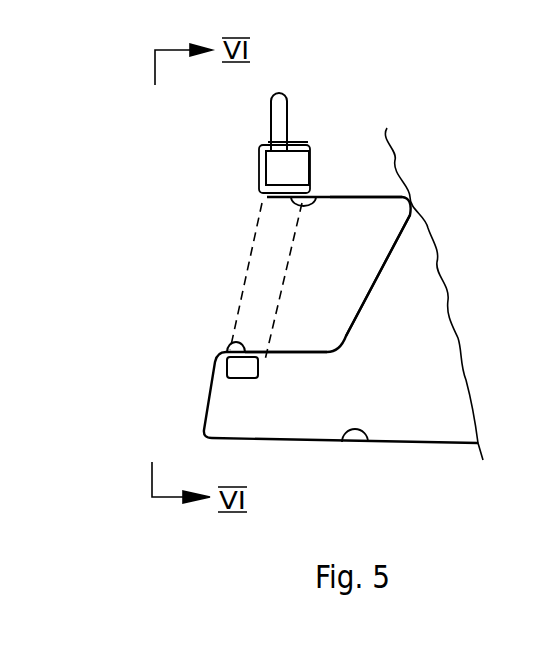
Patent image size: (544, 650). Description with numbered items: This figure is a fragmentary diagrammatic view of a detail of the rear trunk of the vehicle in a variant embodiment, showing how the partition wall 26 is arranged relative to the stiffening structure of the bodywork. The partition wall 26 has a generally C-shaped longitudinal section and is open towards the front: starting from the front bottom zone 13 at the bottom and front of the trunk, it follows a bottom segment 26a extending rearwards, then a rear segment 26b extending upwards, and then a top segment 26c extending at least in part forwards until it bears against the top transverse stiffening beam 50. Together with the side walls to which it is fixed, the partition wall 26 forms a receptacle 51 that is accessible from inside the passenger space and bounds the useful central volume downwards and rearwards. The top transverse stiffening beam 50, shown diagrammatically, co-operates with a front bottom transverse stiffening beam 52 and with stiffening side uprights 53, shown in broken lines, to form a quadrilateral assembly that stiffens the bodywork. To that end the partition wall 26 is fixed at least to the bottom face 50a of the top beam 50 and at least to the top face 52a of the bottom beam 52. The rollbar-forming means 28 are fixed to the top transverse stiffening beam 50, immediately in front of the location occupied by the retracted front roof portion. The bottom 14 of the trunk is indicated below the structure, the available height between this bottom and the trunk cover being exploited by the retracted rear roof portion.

The front bottom zone 13 is at (245, 400).
The bottom 14 is at (358, 443).
The partition wall 26 is at (420, 212).
The bottom segment 26a is at (291, 351).
The rear segment 26b is at (372, 290).
The top segment 26c is at (352, 199).
The rollbar-forming means 28 is at (279, 90).
The top transverse stiffening beam 50 is at (280, 165).
The bottom face of the top beam 50a is at (320, 196).
The receptacle 51 is at (370, 318).
The front bottom transverse stiffening beam 52 is at (260, 368).
The top face of the bottom beam 52a is at (228, 340).
The stiffening side upright 53 is at (243, 261).